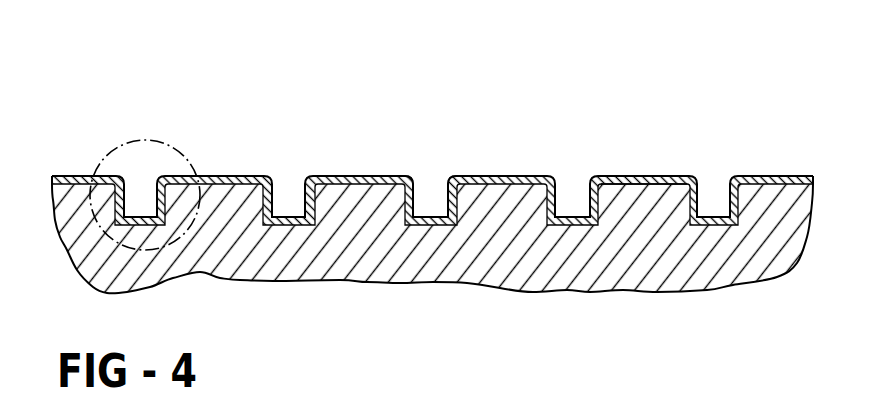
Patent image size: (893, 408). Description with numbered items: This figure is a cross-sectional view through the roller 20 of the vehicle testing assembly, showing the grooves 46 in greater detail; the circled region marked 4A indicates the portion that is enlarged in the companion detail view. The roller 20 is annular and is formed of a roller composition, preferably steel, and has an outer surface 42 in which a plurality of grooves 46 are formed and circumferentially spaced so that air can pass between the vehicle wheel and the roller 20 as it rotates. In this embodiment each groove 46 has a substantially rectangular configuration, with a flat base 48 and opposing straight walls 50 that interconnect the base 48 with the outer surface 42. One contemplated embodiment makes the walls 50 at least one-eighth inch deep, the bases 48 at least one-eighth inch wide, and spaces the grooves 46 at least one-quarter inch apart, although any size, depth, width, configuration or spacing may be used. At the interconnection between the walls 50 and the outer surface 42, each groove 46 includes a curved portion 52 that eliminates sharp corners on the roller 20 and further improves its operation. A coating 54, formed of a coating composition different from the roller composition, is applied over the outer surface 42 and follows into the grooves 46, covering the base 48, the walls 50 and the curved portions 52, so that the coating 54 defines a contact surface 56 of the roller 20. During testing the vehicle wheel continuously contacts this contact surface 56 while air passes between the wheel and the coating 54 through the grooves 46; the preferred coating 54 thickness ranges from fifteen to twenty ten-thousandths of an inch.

The roller 20 is at (260, 268).
The outer surface 42 is at (362, 188).
The groove 46 is at (287, 217).
The base 48 is at (432, 225).
The walls 50 is at (448, 218).
The curved portion 52 is at (537, 188).
The coating 54 is at (658, 180).
The contact surface 56 is at (532, 186).
The detail region of FIG. 4A is at (152, 141).